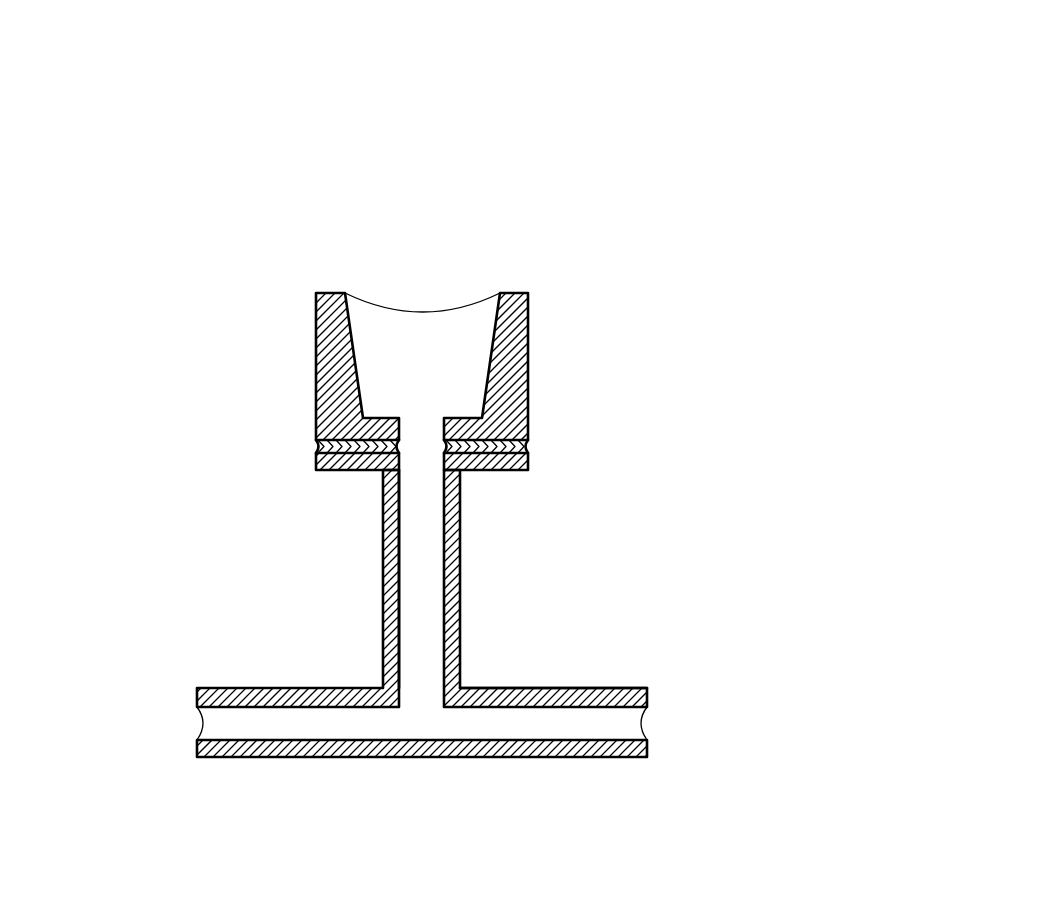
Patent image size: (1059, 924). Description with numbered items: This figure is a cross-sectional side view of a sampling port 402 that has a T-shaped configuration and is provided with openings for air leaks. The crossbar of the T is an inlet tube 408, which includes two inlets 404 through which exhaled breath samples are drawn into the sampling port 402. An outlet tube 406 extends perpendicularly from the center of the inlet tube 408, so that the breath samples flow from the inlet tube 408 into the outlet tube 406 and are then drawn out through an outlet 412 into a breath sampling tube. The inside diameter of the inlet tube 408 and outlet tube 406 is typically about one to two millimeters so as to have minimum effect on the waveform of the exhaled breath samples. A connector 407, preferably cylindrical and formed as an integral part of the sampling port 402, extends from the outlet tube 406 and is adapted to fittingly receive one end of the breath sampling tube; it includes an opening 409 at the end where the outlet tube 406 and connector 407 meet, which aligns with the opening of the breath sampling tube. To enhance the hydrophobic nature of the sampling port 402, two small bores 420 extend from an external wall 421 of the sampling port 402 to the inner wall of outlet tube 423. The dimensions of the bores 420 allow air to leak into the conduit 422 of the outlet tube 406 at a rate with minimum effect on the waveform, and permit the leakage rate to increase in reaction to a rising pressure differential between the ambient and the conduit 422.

The sampling port 402 is at (636, 60).
The inlet 404 is at (180, 722).
The outlet tube 406 is at (462, 640).
The connector 407 is at (545, 344).
The inlet tube 408 is at (553, 688).
The opening 409 is at (419, 388).
The outlet 412 is at (466, 250).
The bore 420 is at (538, 449).
The external wall 421 is at (530, 413).
The conduit 422 is at (420, 567).
The inner wall of outlet tube 423 is at (443, 480).